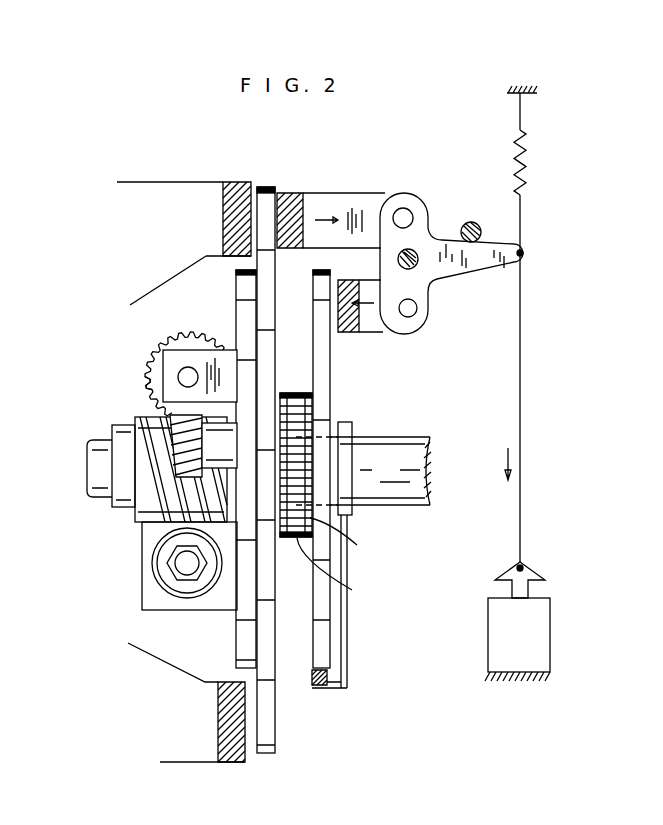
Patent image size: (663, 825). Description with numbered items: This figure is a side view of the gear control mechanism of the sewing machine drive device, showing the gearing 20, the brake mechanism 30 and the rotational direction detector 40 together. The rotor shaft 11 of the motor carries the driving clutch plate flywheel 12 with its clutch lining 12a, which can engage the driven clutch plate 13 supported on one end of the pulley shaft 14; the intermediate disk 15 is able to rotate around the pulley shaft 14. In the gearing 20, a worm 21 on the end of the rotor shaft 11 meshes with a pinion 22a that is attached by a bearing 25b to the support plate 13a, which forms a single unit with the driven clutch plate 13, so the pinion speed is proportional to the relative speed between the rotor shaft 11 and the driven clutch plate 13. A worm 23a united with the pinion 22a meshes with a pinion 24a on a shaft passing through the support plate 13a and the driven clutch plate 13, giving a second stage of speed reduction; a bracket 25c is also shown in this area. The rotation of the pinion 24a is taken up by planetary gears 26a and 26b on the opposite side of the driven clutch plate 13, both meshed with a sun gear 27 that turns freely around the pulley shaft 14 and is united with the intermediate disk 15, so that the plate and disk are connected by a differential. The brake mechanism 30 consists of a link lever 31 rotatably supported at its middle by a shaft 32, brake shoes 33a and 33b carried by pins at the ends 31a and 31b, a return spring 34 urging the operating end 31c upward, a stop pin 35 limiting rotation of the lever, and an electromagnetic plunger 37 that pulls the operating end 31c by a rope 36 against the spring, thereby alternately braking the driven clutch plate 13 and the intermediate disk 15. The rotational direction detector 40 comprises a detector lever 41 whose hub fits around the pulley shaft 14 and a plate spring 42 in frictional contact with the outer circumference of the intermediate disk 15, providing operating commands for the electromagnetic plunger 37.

The rotor shaft 11 is at (90, 462).
The driving clutch plate flywheel 12 is at (166, 190).
The clutch lining 12a is at (235, 188).
The driven clutch plate 13 is at (268, 186).
The support plate 13a is at (240, 292).
The pulley shaft 14 is at (380, 500).
The intermediate disk 15 is at (316, 352).
The gearing 20 is at (133, 548).
The worm 21 is at (147, 508).
The pinion 22a is at (150, 366).
The worm 23a is at (148, 383).
The pinion 24a is at (162, 415).
The bearing 25b is at (163, 602).
The bearing bracket 25c is at (172, 354).
The planetary gear 26a is at (300, 398).
The planetary gear 26b is at (342, 573).
The sun gear 27 is at (344, 548).
The brake mechanism 30 is at (420, 152).
The link lever 31 is at (423, 234).
The end of lever 31a is at (412, 198).
The end of lever 31b is at (414, 312).
The operating end 31c is at (518, 250).
The shaft 32 is at (474, 274).
The brake shoe 33a is at (333, 190).
The brake shoe 33b is at (369, 300).
The return spring 34 is at (527, 158).
The stop pin 35 is at (476, 224).
The rope 36 is at (521, 374).
The electromagnetic plunger 37 is at (538, 622).
The rotational direction detector 40 is at (366, 614).
The detector lever 41 is at (347, 648).
The plate spring 42 is at (320, 688).